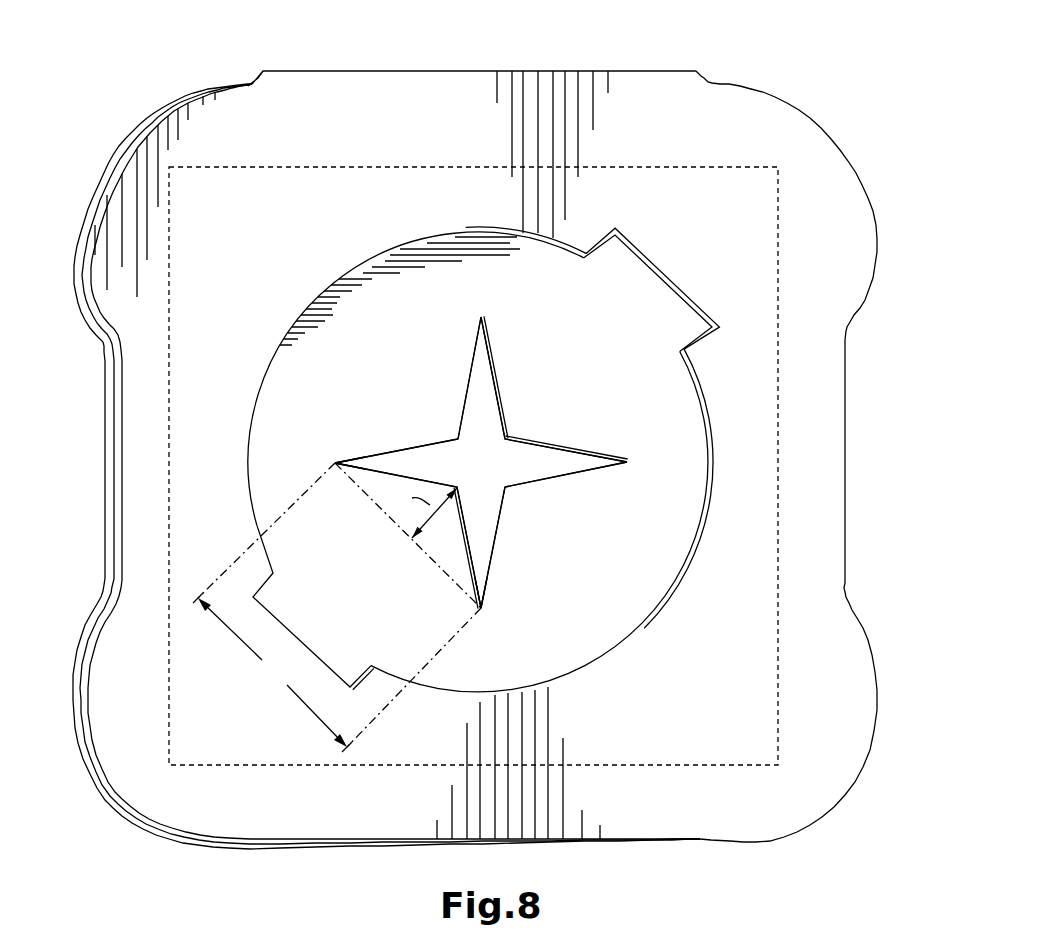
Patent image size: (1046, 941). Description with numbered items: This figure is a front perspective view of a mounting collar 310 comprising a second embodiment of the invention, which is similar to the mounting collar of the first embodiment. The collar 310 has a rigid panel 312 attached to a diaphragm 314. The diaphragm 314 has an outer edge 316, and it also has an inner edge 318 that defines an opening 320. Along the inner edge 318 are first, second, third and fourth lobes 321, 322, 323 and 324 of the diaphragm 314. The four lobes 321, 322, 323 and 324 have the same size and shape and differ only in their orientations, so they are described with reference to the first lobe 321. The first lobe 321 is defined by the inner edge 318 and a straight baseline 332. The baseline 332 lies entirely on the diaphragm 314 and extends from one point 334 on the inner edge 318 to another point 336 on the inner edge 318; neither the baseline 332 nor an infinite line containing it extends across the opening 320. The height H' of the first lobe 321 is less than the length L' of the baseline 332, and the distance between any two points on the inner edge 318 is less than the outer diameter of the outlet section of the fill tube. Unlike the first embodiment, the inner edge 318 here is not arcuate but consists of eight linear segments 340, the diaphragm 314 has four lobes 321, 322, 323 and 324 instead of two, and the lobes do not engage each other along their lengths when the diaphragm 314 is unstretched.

The mounting collar 310 is at (824, 80).
The rigid panel 312 is at (593, 70).
The diaphragm 314 is at (688, 457).
The outer edge 316 is at (475, 167).
The inner edge 318 is at (556, 480).
The opening 320 is at (484, 489).
The first lobe 321 is at (392, 514).
The second lobe 322 is at (441, 387).
The third lobe 323 is at (530, 418).
The fourth lobe 324 is at (533, 520).
The baseline 332 is at (432, 563).
The point on the inner edge 334 is at (335, 462).
The point on the inner edge 336 is at (483, 612).
The linear segments 340 is at (407, 447).